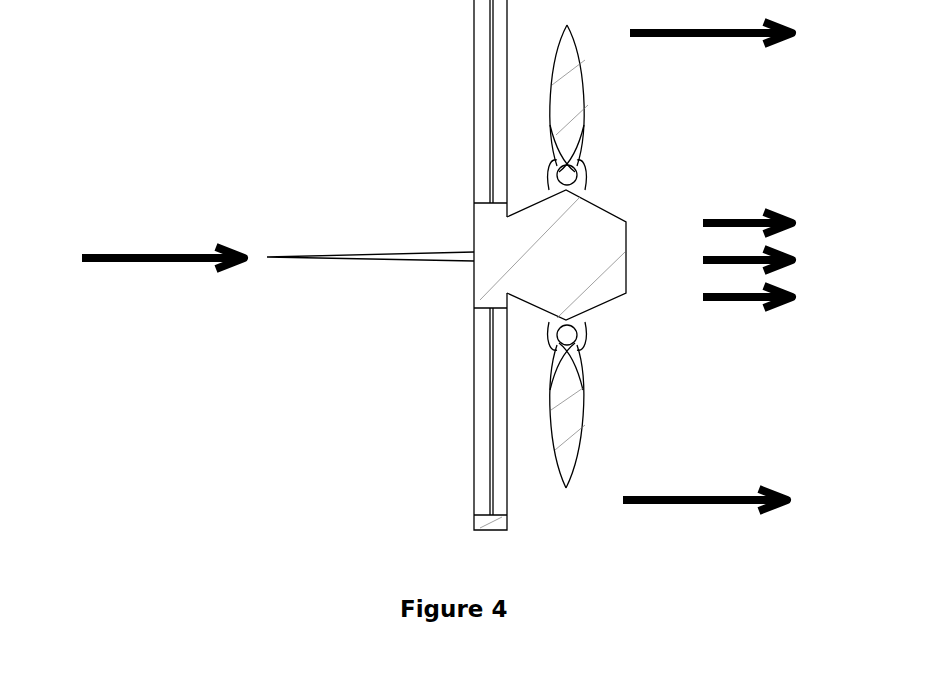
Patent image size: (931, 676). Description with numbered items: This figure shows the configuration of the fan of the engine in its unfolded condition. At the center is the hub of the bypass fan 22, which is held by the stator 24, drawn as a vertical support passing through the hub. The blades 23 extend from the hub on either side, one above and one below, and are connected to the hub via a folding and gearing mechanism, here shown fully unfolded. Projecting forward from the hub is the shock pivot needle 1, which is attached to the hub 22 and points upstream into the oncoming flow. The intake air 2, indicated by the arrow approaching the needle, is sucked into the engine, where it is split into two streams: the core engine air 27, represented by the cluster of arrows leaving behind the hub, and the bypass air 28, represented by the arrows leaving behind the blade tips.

The shock pivot needle 1 is at (337, 253).
The intake air 2 is at (163, 246).
The hub of bypass fan 22 is at (626, 255).
The blades 23 is at (570, 397).
The stator 24 is at (492, 457).
The core engine air 27 is at (753, 302).
The bypass air 28 is at (705, 35).